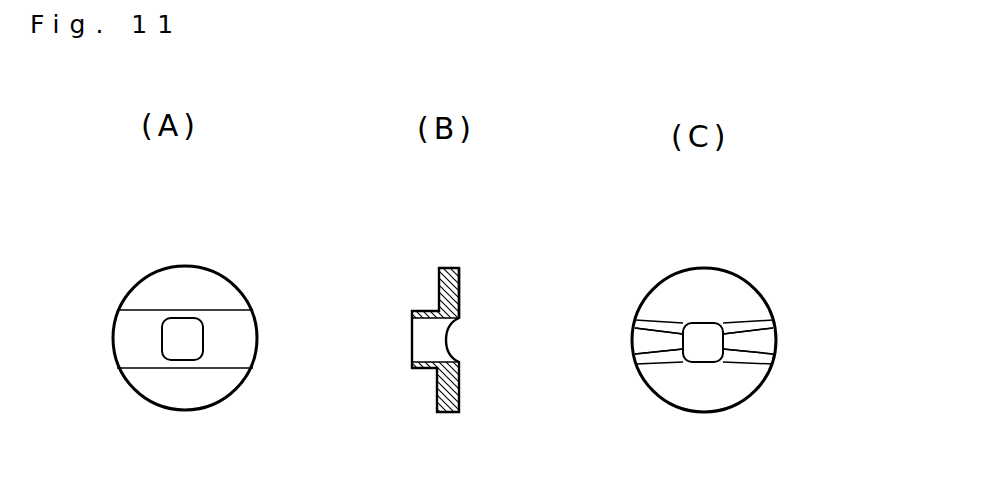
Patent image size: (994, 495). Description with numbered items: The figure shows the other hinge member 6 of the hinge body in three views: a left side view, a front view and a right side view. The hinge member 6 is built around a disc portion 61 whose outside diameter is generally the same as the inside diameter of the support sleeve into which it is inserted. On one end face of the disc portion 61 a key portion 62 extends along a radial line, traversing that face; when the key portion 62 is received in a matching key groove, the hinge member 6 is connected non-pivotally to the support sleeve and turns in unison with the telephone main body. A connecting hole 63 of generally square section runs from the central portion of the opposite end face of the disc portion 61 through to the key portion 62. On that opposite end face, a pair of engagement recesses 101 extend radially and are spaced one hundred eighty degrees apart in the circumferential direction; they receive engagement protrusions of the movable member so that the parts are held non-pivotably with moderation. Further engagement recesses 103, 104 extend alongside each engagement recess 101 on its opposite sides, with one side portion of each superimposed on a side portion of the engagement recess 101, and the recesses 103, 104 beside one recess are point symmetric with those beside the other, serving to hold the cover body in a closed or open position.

The hinge member 6 is at (219, 271).
The disc portion 61 is at (165, 288).
The key portion 62 is at (243, 333).
The connecting hole 63 is at (180, 351).
The engagement recess 101 is at (638, 343).
The engagement recess 103 is at (638, 327).
The engagement recess 104 is at (640, 360).